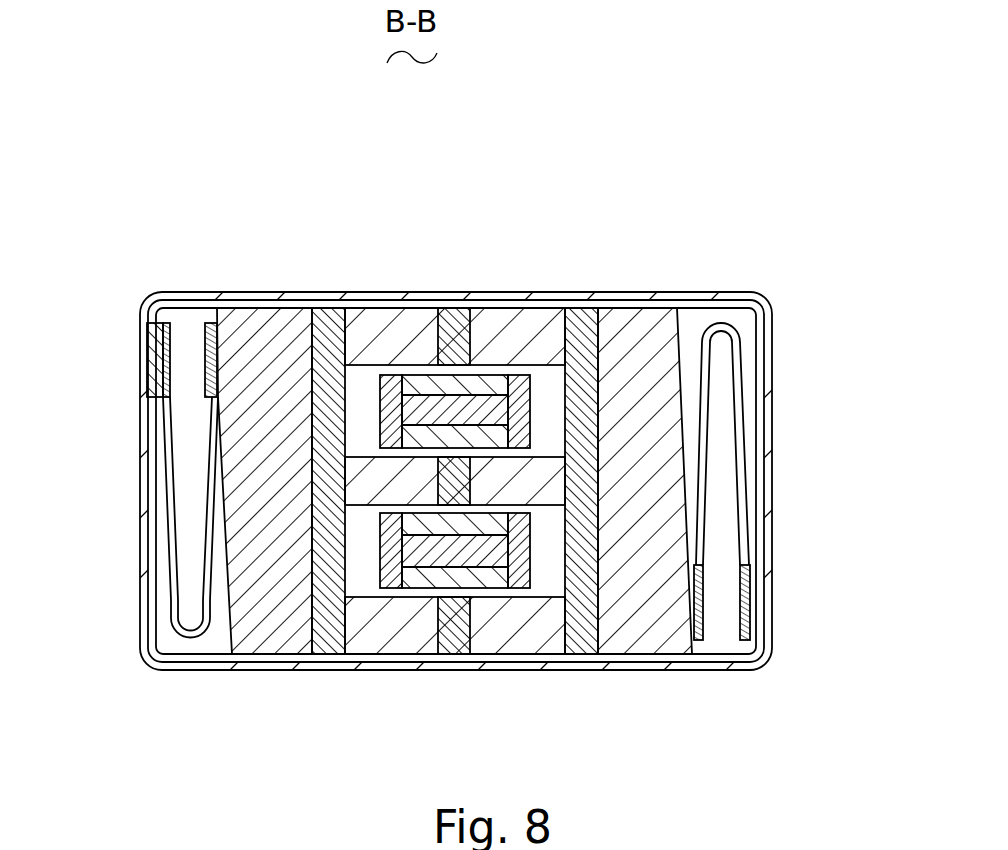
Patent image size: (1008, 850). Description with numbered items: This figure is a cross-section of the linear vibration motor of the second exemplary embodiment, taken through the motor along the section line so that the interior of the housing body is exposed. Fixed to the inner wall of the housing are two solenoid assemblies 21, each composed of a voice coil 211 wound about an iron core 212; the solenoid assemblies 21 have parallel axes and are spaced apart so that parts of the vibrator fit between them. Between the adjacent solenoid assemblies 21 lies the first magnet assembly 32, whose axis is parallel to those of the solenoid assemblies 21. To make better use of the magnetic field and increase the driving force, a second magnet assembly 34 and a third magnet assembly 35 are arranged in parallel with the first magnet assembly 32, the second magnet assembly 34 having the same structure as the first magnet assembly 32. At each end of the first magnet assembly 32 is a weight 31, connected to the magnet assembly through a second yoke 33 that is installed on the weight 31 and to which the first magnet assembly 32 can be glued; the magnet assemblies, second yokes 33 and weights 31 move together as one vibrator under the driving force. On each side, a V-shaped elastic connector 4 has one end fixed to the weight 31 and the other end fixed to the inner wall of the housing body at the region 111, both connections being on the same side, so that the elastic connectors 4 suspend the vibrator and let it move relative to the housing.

The shell top wall tab 111 is at (192, 297).
The elastic connector 4 is at (175, 537).
The weight 31 is at (278, 340).
The third magnet assembly 35 is at (528, 352).
The first magnet assembly 32 is at (523, 482).
The second magnet assembly 34 is at (522, 623).
The second yoke 33 is at (583, 317).
The solenoid assembly 21 is at (424, 364).
The voice coil 211 is at (492, 408).
The iron core 212 is at (393, 383).